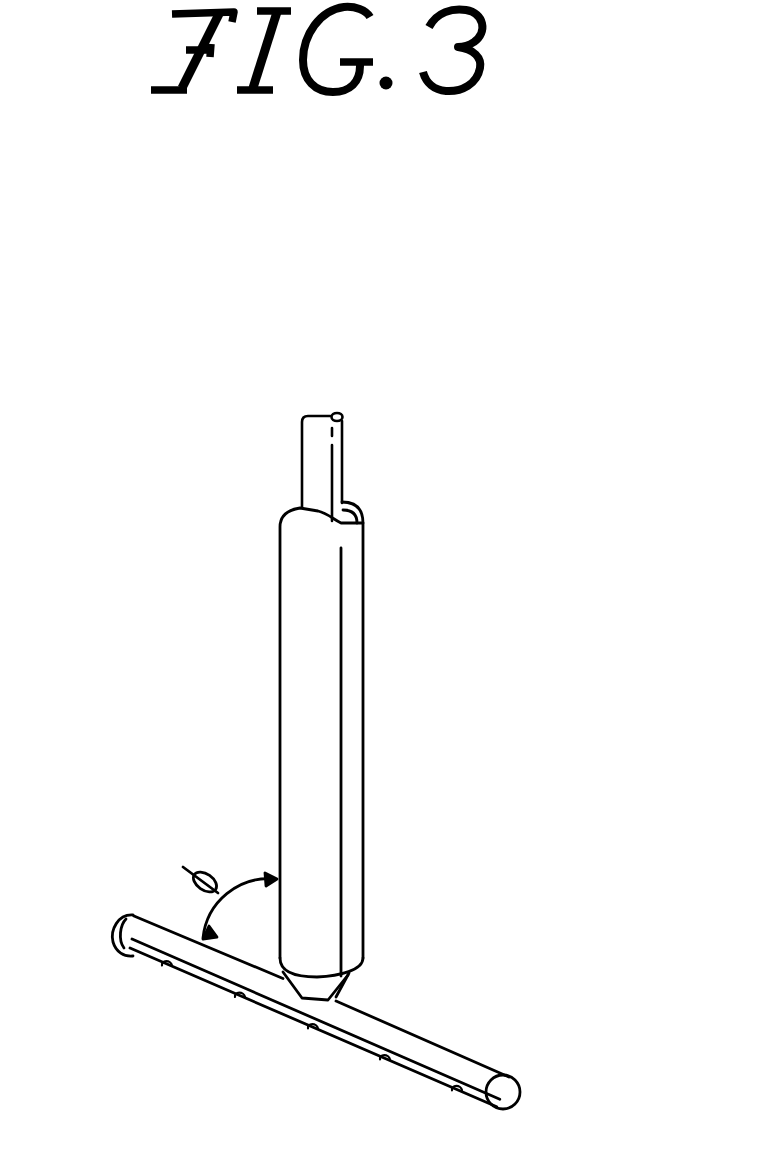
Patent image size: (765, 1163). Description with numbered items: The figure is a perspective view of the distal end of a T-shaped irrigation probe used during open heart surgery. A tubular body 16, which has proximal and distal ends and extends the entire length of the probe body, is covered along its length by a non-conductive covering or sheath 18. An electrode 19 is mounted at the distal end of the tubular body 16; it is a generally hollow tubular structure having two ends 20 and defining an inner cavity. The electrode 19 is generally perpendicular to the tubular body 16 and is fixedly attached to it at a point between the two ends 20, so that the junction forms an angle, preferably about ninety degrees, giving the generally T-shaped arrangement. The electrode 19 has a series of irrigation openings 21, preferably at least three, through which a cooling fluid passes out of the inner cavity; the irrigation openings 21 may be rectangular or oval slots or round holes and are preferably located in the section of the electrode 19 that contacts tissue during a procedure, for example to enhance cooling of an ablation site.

The tubular body 16 is at (318, 468).
The non-conductive covering or sheath 18 is at (295, 713).
The electrode 19 is at (453, 1048).
The ends 20 is at (113, 923).
The irrigation openings 21 is at (313, 1028).